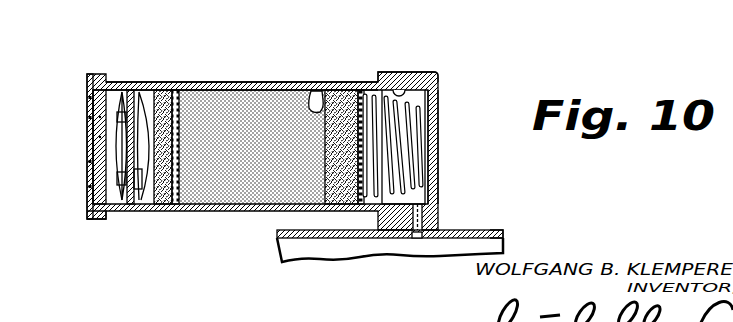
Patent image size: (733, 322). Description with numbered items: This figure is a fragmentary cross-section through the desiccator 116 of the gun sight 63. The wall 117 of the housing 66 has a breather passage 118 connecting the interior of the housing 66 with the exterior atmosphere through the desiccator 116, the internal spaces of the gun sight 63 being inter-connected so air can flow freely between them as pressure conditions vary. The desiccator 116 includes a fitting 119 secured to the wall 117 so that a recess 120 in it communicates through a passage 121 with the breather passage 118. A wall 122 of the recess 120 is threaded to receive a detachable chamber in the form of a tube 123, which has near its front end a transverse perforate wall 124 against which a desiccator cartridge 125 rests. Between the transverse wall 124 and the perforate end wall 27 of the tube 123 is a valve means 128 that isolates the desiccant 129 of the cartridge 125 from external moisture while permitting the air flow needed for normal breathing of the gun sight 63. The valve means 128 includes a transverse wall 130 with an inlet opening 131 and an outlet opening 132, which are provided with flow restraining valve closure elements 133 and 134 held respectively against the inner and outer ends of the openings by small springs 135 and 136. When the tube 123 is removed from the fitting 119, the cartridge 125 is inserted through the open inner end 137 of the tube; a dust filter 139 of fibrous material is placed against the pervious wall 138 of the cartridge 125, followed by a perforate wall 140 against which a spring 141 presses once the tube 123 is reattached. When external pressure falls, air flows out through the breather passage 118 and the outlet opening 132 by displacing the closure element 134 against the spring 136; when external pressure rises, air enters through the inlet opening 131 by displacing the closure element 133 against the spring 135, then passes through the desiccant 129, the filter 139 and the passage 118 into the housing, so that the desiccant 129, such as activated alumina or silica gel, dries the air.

The perforate end wall 27 is at (88, 135).
The gun sight 63 is at (500, 231).
The housing 66 is at (322, 238).
The desiccator 116 is at (90, 223).
The wall 117 is at (360, 238).
The breather passage 118 is at (417, 240).
The fitting 119 is at (442, 76).
The recess 120 is at (438, 92).
The passage 121 is at (418, 214).
The wall of the recess 122 is at (392, 81).
The tube 123 is at (250, 83).
The transverse perforate wall 124 is at (176, 88).
The desiccator cartridge 125 is at (221, 182).
The valve means 128 is at (122, 152).
The desiccant 129 is at (258, 175).
The transverse wall 130 is at (133, 190).
The inlet opening 131 is at (122, 185).
The outlet opening 132 is at (148, 117).
The valve closure element 133 is at (137, 195).
The valve closure element 134 is at (124, 108).
The spring 135 is at (158, 103).
The spring 136 is at (113, 139).
The open inner end 137 is at (415, 96).
The pervious wall 138 is at (316, 96).
The dust filter 139 is at (343, 100).
The perforate wall 140 is at (356, 97).
The spring 141 is at (408, 129).